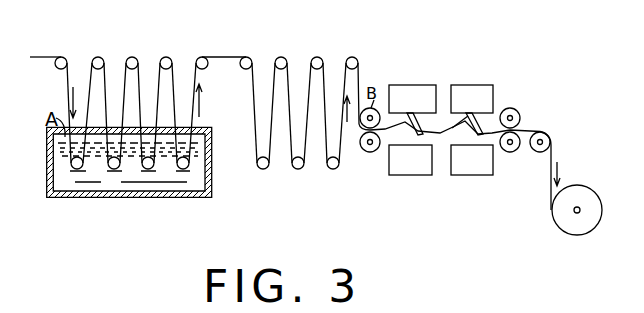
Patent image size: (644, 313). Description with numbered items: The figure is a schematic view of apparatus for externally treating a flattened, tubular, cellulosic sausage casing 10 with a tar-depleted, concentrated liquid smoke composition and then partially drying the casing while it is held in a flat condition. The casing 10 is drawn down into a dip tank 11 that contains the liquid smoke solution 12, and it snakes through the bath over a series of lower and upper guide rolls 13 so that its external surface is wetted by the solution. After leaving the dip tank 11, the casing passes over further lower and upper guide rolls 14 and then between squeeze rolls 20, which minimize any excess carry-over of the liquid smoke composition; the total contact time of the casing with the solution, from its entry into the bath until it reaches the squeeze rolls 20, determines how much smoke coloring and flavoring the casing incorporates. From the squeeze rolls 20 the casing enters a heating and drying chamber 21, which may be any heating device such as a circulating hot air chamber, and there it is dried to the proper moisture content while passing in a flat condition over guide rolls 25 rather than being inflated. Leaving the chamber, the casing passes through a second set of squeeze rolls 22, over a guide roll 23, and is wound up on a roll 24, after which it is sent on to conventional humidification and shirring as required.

The cellulosic sausage casing 10 is at (66, 90).
The dip tank 11 is at (80, 198).
The liquid smoke solution 12 is at (163, 186).
The lower and upper guide rolls 13 is at (56, 67).
The lower and upper guide rolls 14 is at (245, 57).
The squeeze rolls 20 is at (363, 152).
The heating and drying chamber 21 is at (436, 92).
The squeeze rolls 22 is at (512, 108).
The guide roll 23 is at (550, 139).
The wind-up roll 24 is at (588, 225).
The guide rolls 25 is at (442, 114).